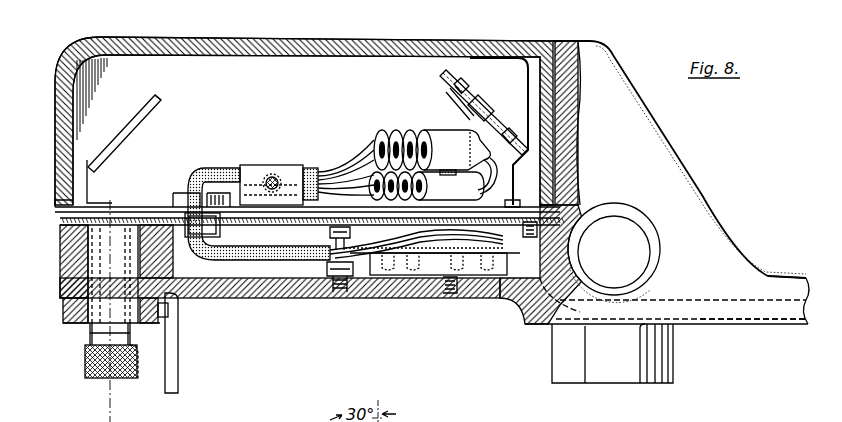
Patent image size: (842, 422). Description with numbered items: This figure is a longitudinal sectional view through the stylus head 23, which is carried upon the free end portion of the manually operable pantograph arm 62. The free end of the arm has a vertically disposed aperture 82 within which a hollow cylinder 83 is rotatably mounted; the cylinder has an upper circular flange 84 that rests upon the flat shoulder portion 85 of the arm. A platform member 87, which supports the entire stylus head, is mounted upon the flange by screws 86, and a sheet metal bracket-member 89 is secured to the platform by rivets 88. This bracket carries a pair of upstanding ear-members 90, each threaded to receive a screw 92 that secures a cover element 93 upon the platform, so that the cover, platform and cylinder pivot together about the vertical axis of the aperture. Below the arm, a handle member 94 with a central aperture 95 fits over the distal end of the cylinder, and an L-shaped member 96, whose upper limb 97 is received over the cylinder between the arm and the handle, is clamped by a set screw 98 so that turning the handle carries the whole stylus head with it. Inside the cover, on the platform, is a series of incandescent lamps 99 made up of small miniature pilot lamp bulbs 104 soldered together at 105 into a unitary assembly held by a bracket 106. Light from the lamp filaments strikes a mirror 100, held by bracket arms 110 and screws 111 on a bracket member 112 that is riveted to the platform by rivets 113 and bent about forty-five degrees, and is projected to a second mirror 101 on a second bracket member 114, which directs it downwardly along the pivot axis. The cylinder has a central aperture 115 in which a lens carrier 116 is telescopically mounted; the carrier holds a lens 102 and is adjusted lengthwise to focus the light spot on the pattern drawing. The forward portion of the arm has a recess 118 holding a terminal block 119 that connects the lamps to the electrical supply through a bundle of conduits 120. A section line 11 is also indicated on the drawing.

The stylus head 23 is at (467, 34).
The pantograph arm 62 is at (770, 277).
The aperture 82 is at (62, 272).
The hollow cylinder 83 is at (70, 310).
The upper circular flange 84 is at (57, 210).
The flat shoulder portion 85 is at (60, 222).
The screws 86 is at (102, 205).
The platform member 87 is at (58, 206).
The rivets 88 is at (256, 222).
The sheet metal bracket-member 89 is at (190, 203).
The ear-members 90 is at (254, 166).
The screw 92 is at (275, 178).
The cover element 93 is at (298, 40).
The handle member 94 is at (85, 310).
The central aperture 95 is at (82, 330).
The L-shaped member 96 is at (179, 344).
The upper limb 97 is at (64, 303).
The set screw 98 is at (180, 308).
The incandescent lamps 99 is at (389, 116).
The mirror 100 is at (444, 82).
The second mirror 101 is at (160, 108).
The lens 102 is at (132, 352).
The miniature pilot lamp bulbs 104 is at (490, 168).
The solder joint 105 is at (478, 180).
The bracket 106 is at (350, 198).
The bracket arms 110 is at (476, 128).
The screws 111 is at (461, 85).
The bracket member 112 is at (483, 108).
The rivets 113 is at (545, 206).
The second bracket member 114 is at (143, 100).
The central aperture 115 is at (60, 249).
The lens carrier 116 is at (84, 376).
The recess 118 is at (290, 282).
The terminal block 119 is at (400, 270).
The bundle of conduits 120 is at (330, 165).
The section line 11 is at (120, 179).